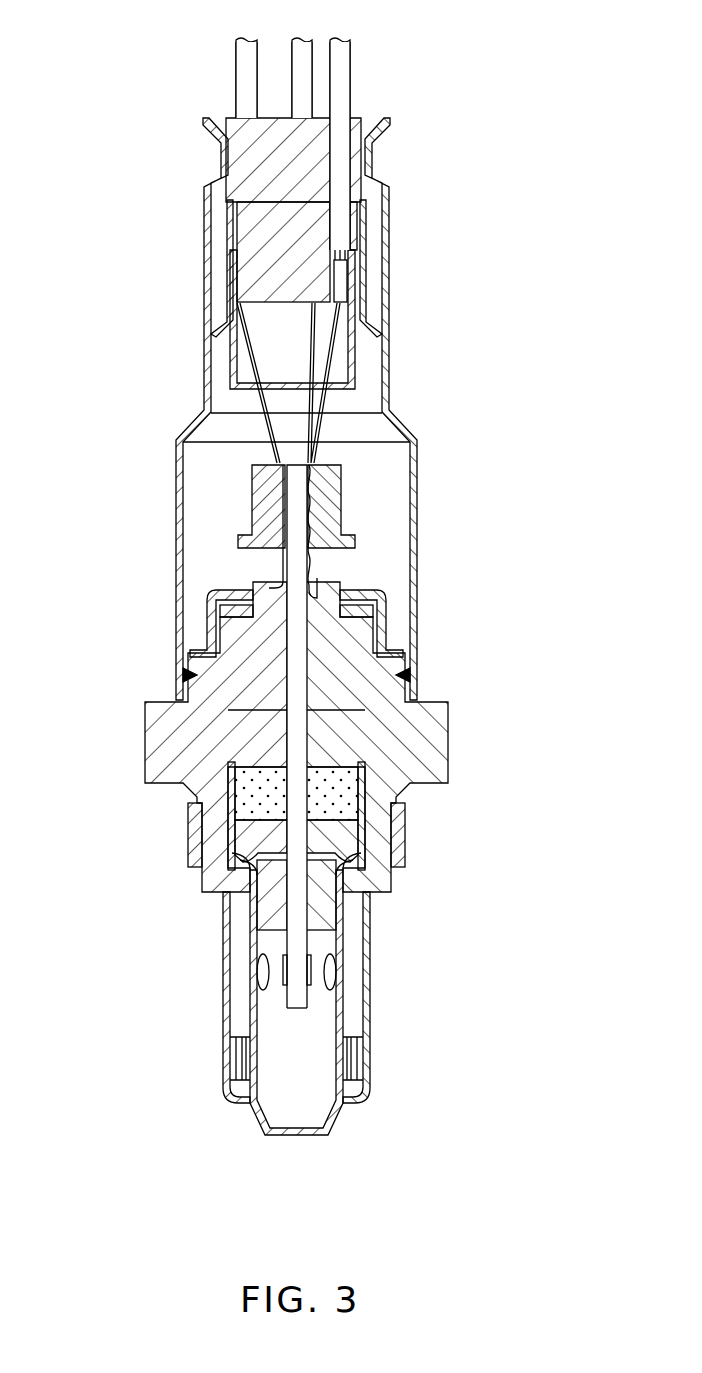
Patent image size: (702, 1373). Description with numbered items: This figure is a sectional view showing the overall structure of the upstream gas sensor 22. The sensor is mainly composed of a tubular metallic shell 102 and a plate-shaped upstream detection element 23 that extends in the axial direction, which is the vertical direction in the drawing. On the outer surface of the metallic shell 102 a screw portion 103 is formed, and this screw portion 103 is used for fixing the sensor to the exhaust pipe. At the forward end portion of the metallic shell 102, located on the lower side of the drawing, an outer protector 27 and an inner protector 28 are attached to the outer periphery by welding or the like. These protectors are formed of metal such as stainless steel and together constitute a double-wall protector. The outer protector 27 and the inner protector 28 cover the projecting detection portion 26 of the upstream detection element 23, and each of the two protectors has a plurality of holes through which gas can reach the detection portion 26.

The upstream gas sensor 22 is at (494, 82).
The metallic shell 102 is at (185, 734).
The screw portion 103 is at (188, 833).
The upstream detection element 23 is at (300, 757).
The detection portion 26 is at (285, 943).
The outer protector 27 is at (375, 992).
The inner protector 28 is at (338, 1124).